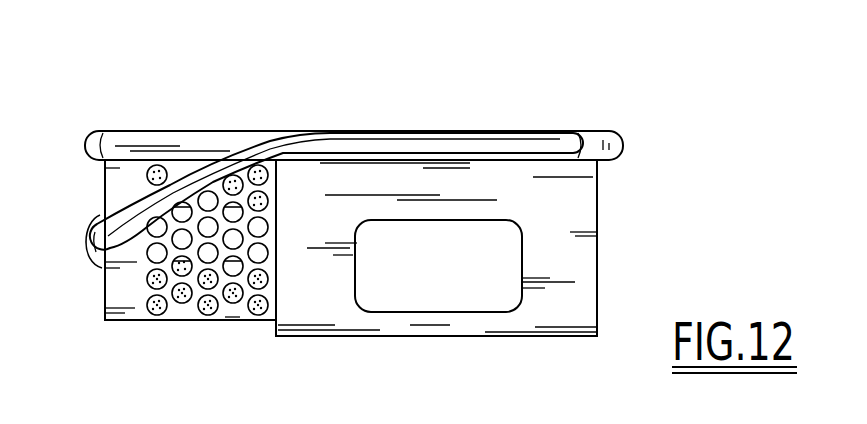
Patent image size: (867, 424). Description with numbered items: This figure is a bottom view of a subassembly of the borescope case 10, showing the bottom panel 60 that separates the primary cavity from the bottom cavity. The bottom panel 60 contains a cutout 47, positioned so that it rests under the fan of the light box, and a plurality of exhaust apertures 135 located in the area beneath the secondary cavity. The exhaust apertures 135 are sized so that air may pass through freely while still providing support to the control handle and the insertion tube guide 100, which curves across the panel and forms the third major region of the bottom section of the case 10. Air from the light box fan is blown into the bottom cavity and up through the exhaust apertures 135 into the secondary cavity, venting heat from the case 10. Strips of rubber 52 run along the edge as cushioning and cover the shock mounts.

The case 10 is at (95, 290).
The cutout 47 is at (467, 290).
The strips of rubber 52 is at (88, 136).
The bottom panel 60 is at (570, 264).
The insertion tube guide 100 is at (317, 142).
The exhaust apertures 135 is at (173, 318).